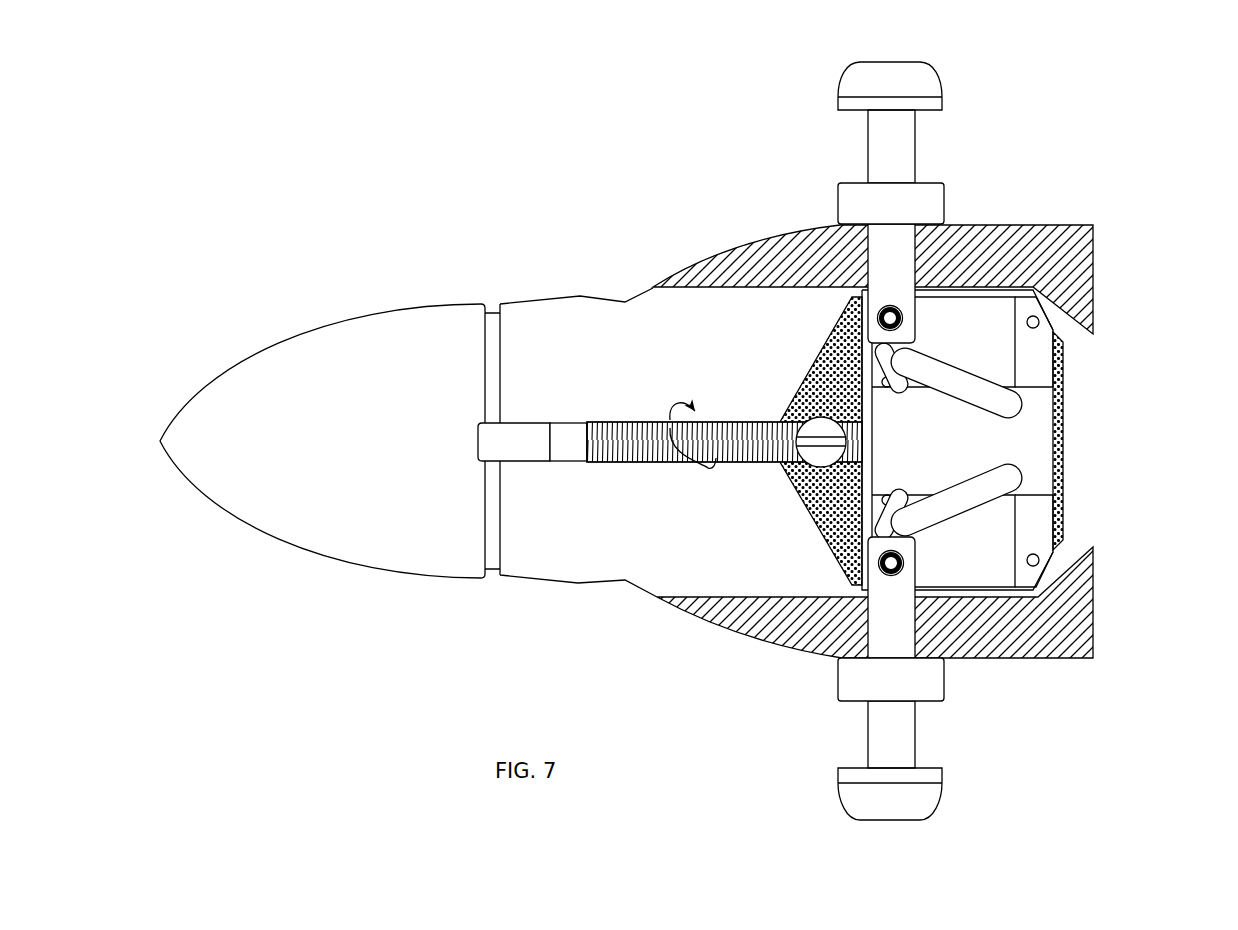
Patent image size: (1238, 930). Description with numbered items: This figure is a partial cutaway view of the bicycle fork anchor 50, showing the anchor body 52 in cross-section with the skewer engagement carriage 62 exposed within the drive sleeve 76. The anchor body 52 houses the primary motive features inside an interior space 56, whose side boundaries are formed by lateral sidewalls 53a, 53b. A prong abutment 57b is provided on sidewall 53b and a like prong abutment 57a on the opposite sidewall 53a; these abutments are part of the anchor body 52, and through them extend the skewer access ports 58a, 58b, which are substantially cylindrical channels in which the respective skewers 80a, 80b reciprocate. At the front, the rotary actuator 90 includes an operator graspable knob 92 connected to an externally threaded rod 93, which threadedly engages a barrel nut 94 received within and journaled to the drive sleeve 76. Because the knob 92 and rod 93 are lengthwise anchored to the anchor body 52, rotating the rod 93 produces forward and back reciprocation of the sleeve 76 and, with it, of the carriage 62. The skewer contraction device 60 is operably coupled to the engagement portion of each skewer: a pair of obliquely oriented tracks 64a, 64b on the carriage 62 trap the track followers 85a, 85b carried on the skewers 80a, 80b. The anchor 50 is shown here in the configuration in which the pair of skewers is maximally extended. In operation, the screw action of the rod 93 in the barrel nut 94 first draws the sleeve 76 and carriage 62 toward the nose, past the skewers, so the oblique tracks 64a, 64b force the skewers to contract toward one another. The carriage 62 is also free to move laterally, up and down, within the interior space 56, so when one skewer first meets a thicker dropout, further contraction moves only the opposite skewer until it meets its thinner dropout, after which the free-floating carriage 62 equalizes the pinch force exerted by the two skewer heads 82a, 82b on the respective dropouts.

The bicycle fork anchor 50 is at (372, 208).
The anchor body 52 is at (854, 435).
The lateral sidewall 53a is at (753, 249).
The lateral sidewall 53b is at (772, 628).
The interior space 56 is at (708, 560).
The prong abutment 57a is at (931, 195).
The prong abutment 57b is at (930, 685).
The skewer access port 58a is at (920, 252).
The skewer access port 58b is at (920, 630).
The skewer contraction device 60 is at (1048, 442).
The skewer engagement carriage 62 is at (1040, 427).
The obliquely oriented track 64a is at (1003, 388).
The obliquely oriented track 64b is at (1003, 492).
The drive sleeve 76 is at (812, 378).
The skewer 80a is at (895, 183).
The skewer 80b is at (915, 683).
The skewer head 82a is at (920, 82).
The skewer head 82b is at (918, 793).
The track follower 85a is at (895, 318).
The track follower 85b is at (896, 563).
The rotary actuator 90 is at (273, 566).
The operator graspable knob 92 is at (262, 456).
The threaded rod 93 is at (608, 456).
The barrel nut 94 is at (768, 462).